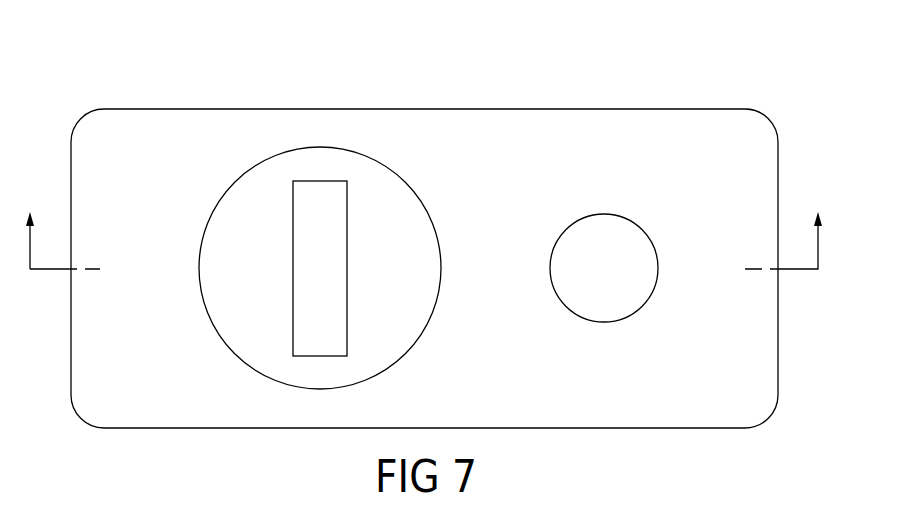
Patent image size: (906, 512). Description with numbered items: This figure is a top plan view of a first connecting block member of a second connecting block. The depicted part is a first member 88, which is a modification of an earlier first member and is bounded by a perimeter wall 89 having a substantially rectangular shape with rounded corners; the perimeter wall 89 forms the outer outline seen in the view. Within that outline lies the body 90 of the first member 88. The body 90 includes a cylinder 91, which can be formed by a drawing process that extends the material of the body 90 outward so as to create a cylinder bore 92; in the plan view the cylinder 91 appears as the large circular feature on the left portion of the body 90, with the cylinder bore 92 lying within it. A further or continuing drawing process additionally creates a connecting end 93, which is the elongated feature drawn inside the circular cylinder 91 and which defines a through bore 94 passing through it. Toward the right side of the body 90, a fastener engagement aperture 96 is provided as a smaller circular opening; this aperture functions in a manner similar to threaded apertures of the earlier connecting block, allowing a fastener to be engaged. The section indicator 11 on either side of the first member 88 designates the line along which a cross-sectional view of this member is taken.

The faceplate assembly 88 is at (697, 78).
The plate body 89 is at (778, 373).
The front surface 90 is at (491, 127).
The circular recess 91 is at (222, 195).
The recess floor 92 is at (265, 177).
The slot 93 is at (347, 215).
The slot opening 94 is at (318, 192).
The circular aperture 96 is at (606, 233).
The section line 11- 11 is at (431, 223).